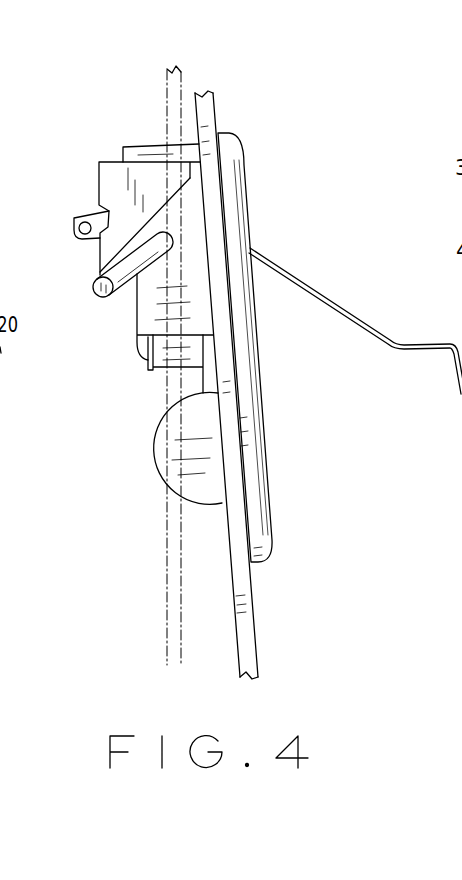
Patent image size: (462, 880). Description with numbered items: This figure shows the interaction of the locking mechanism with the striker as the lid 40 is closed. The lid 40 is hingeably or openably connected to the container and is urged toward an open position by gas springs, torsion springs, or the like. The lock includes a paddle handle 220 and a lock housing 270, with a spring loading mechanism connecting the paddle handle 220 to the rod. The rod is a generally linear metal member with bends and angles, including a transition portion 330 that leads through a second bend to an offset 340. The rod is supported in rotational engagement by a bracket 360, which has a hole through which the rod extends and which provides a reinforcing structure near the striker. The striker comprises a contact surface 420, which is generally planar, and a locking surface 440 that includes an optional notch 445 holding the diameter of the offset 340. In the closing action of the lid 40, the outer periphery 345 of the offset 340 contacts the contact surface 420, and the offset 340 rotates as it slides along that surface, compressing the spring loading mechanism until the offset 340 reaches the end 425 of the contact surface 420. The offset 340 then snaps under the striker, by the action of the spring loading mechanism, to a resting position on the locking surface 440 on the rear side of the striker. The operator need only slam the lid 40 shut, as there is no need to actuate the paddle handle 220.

The lid 40 is at (243, 636).
The paddle handle 220 is at (302, 282).
The lock housing 270 is at (266, 531).
The transition portion 330 is at (123, 305).
The offset 340 is at (100, 293).
The outer periphery 345 is at (96, 288).
The bracket 360 is at (150, 152).
The contact surface 420 is at (110, 219).
The end 425 is at (100, 270).
The locking surface 440 is at (98, 178).
The notch 445 is at (76, 221).